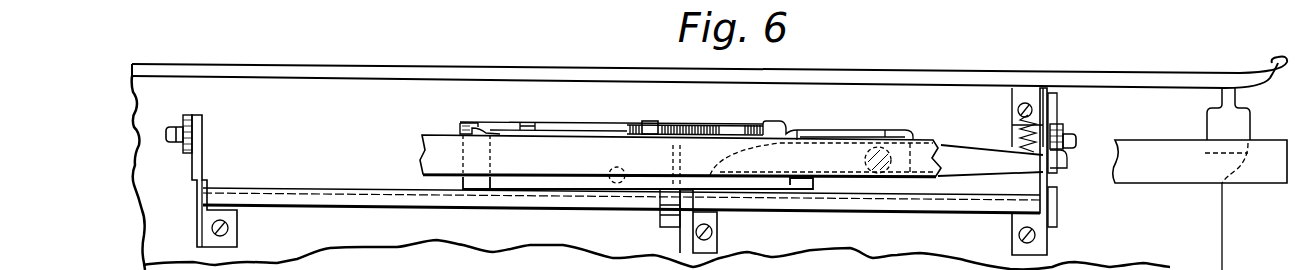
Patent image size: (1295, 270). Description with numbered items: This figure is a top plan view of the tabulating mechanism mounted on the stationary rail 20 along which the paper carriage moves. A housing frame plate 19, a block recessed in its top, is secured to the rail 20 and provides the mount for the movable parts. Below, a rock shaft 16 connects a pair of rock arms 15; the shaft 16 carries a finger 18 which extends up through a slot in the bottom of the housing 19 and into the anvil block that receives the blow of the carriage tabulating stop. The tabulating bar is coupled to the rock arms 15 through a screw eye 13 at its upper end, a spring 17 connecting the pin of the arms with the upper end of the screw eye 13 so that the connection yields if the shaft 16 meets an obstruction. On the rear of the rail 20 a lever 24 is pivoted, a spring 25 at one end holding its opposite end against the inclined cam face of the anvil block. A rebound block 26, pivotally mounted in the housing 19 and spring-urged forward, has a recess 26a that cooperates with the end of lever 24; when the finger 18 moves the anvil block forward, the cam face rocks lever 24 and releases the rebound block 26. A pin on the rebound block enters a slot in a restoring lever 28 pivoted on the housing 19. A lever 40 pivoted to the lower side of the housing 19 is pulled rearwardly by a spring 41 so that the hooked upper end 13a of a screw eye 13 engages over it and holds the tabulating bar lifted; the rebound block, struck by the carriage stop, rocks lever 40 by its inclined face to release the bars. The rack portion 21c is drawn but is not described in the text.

The screw eye 13 is at (190, 117).
The hooked upper end 13a is at (1062, 127).
The rock arm 15 is at (202, 161).
The rock shaft 16 is at (338, 198).
The spring 17 is at (178, 140).
The finger 18 is at (653, 210).
The housing frame plate 19 is at (567, 180).
The stationary rail 20 is at (438, 140).
The rack 21c is at (652, 122).
The lever 24 is at (567, 133).
The spring 25 is at (475, 123).
The rebound block 26 is at (842, 138).
The recess 26a is at (782, 135).
The restoring lever 28 is at (640, 177).
The lever 40 is at (962, 152).
The spring 41 is at (1017, 142).